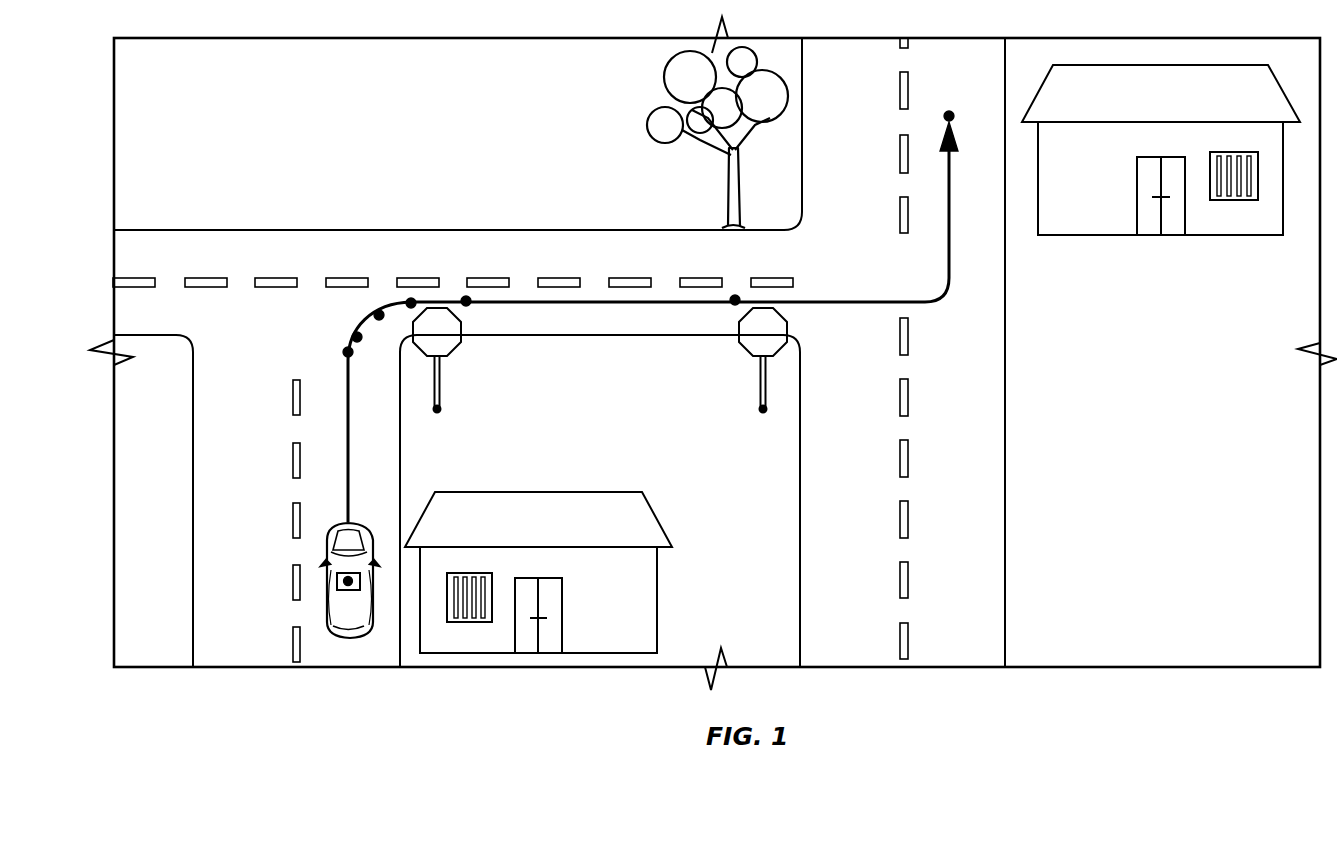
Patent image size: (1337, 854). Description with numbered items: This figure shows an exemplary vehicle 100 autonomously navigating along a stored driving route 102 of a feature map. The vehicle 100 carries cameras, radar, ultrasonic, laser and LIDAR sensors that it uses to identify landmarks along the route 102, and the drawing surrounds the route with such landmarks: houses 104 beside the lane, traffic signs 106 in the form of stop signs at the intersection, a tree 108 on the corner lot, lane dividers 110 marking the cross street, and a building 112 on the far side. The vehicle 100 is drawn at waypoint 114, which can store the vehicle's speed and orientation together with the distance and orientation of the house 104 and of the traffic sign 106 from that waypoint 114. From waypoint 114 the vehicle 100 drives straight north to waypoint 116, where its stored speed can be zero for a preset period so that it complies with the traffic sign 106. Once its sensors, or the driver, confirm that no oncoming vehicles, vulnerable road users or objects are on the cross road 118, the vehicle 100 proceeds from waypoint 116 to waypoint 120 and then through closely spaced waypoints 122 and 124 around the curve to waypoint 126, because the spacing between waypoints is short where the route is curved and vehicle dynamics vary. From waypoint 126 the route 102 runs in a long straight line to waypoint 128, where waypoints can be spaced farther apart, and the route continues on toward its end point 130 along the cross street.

The vehicle 100 is at (327, 546).
The route 102 is at (346, 416).
The house 104 is at (445, 491).
The traffic sign 106 is at (463, 333).
The tree 108 is at (766, 63).
The lane divider 110 is at (899, 94).
The building 112 is at (1037, 172).
The waypoint 114 is at (337, 582).
The waypoint 116 is at (346, 353).
The road 118 is at (183, 228).
The waypoint 120 is at (355, 338).
The waypoint 122 is at (379, 313).
The waypoint 124 is at (411, 301).
The waypoint 126 is at (462, 299).
The waypoint 128 is at (734, 298).
The destination point 130 is at (951, 110).